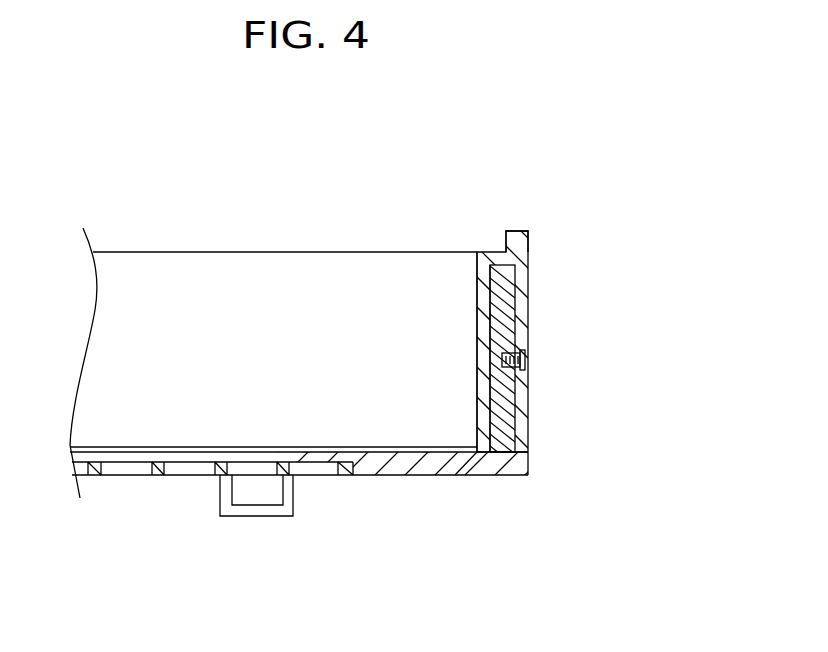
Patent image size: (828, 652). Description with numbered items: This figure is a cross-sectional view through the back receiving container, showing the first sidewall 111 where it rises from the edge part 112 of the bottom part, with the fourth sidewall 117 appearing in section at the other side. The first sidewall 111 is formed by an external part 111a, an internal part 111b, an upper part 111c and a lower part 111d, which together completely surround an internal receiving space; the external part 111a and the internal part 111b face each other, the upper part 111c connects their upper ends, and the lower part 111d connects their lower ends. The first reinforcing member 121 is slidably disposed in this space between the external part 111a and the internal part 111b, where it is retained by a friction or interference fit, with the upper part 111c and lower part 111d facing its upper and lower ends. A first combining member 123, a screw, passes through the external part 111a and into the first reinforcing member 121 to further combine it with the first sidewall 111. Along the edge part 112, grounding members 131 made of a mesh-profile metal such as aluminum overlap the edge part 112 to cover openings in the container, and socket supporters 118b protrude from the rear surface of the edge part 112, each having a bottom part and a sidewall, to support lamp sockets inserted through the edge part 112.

The fourth sidewall 117 is at (281, 280).
The first sidewall 111 is at (612, 213).
The external part 111a is at (518, 330).
The internal part 111b is at (478, 308).
The upper part 111c is at (483, 253).
The lower part 111d is at (498, 450).
The edge part 112 is at (385, 465).
The socket supporter 118b is at (260, 517).
The first reinforcing member 121 is at (477, 420).
The first combining member 123 is at (500, 358).
The grounding member 131 is at (153, 476).